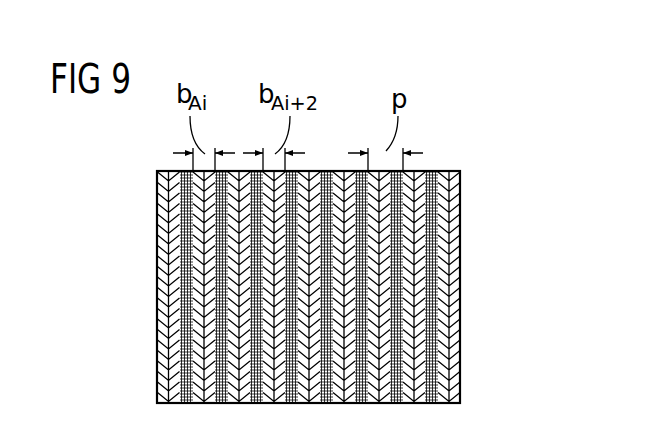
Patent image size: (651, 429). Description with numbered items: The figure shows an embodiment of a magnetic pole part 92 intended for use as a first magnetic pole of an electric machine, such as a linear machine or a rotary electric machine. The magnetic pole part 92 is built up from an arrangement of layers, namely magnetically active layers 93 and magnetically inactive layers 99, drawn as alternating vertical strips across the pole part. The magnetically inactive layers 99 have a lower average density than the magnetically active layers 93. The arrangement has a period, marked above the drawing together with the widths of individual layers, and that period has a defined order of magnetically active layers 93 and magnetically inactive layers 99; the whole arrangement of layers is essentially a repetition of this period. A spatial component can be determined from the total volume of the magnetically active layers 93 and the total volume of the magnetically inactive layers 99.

The magnetic pole part 92 is at (305, 229).
The magnetically active layers 93 is at (158, 293).
The magnetically inactive layers 99 is at (432, 293).